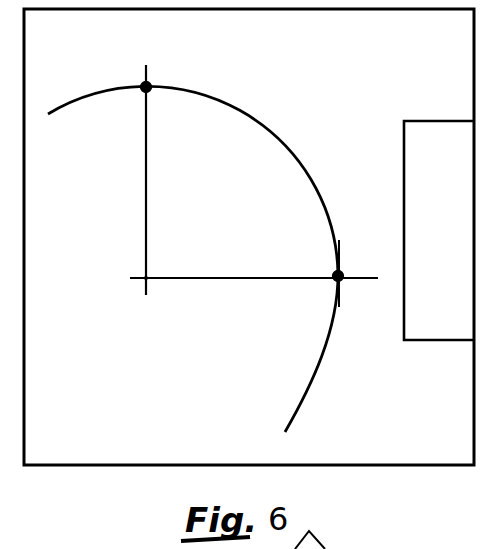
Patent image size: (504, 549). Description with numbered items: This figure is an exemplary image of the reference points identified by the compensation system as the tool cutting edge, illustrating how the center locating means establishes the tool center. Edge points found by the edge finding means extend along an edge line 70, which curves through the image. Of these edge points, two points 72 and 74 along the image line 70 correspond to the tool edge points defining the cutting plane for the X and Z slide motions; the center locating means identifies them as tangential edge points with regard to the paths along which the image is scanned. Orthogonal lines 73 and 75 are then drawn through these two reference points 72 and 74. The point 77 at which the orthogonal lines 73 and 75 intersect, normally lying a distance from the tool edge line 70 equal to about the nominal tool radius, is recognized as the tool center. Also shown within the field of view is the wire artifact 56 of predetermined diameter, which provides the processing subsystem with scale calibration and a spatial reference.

The wire artifact 56 is at (427, 142).
The edge line 70 is at (315, 370).
The tangential edge point 72 is at (152, 84).
The orthogonal line 73 is at (146, 190).
The tangential edge point 74 is at (344, 269).
The orthogonal line 75 is at (213, 277).
The tool center point 77 is at (143, 280).